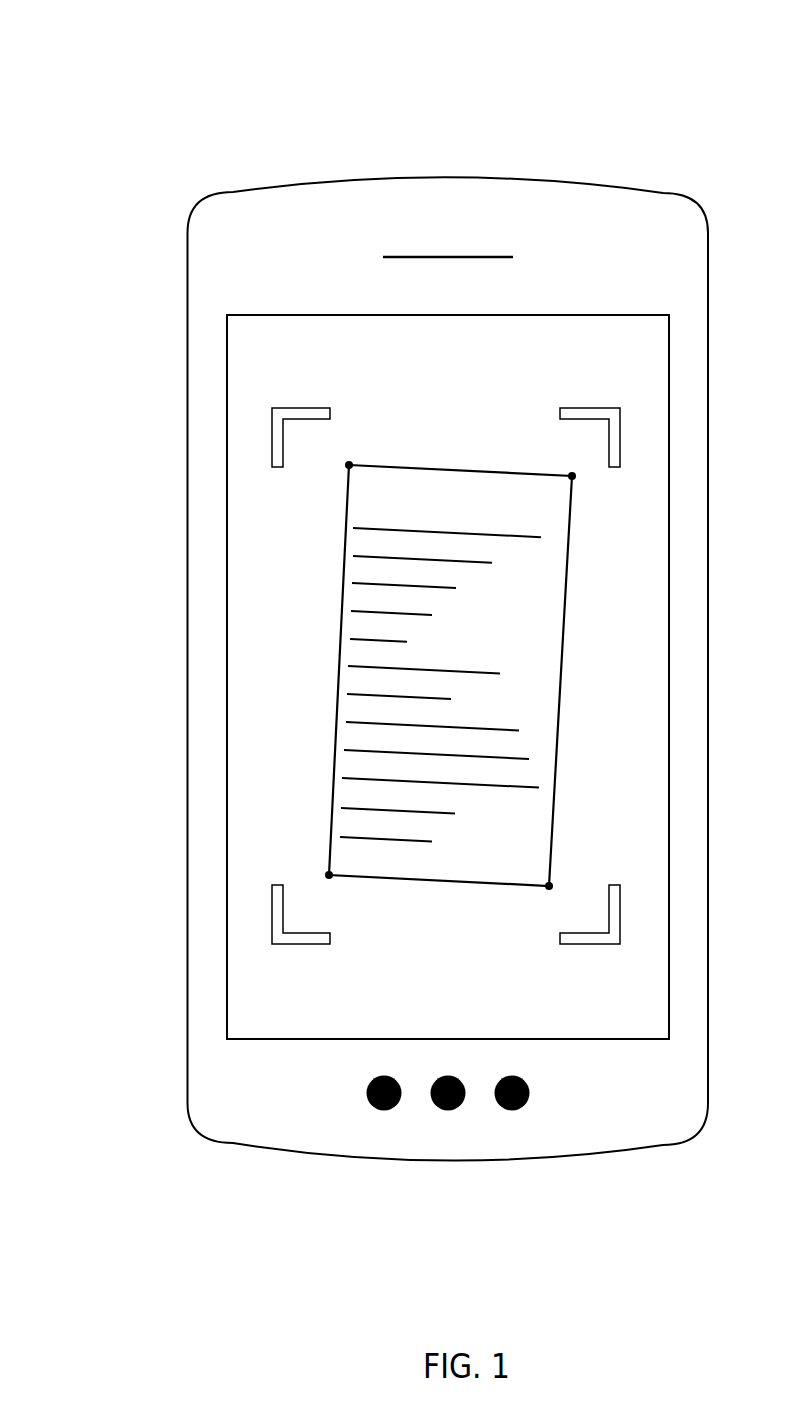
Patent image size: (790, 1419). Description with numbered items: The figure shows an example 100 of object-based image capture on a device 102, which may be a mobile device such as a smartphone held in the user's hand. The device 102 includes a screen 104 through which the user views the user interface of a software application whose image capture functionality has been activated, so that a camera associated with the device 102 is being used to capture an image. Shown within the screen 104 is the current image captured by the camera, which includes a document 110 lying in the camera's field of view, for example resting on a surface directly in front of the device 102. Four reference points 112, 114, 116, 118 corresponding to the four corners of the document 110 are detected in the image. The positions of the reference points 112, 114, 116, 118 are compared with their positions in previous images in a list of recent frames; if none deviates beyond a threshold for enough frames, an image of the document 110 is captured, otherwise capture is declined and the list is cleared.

The example of object-based image capture 100 is at (106, 61).
The device 102 is at (463, 177).
The screen 104 is at (545, 315).
The document 110 is at (423, 470).
The reference point 112 is at (349, 465).
The reference point 114 is at (572, 476).
The reference point 116 is at (329, 875).
The reference point 118 is at (549, 886).